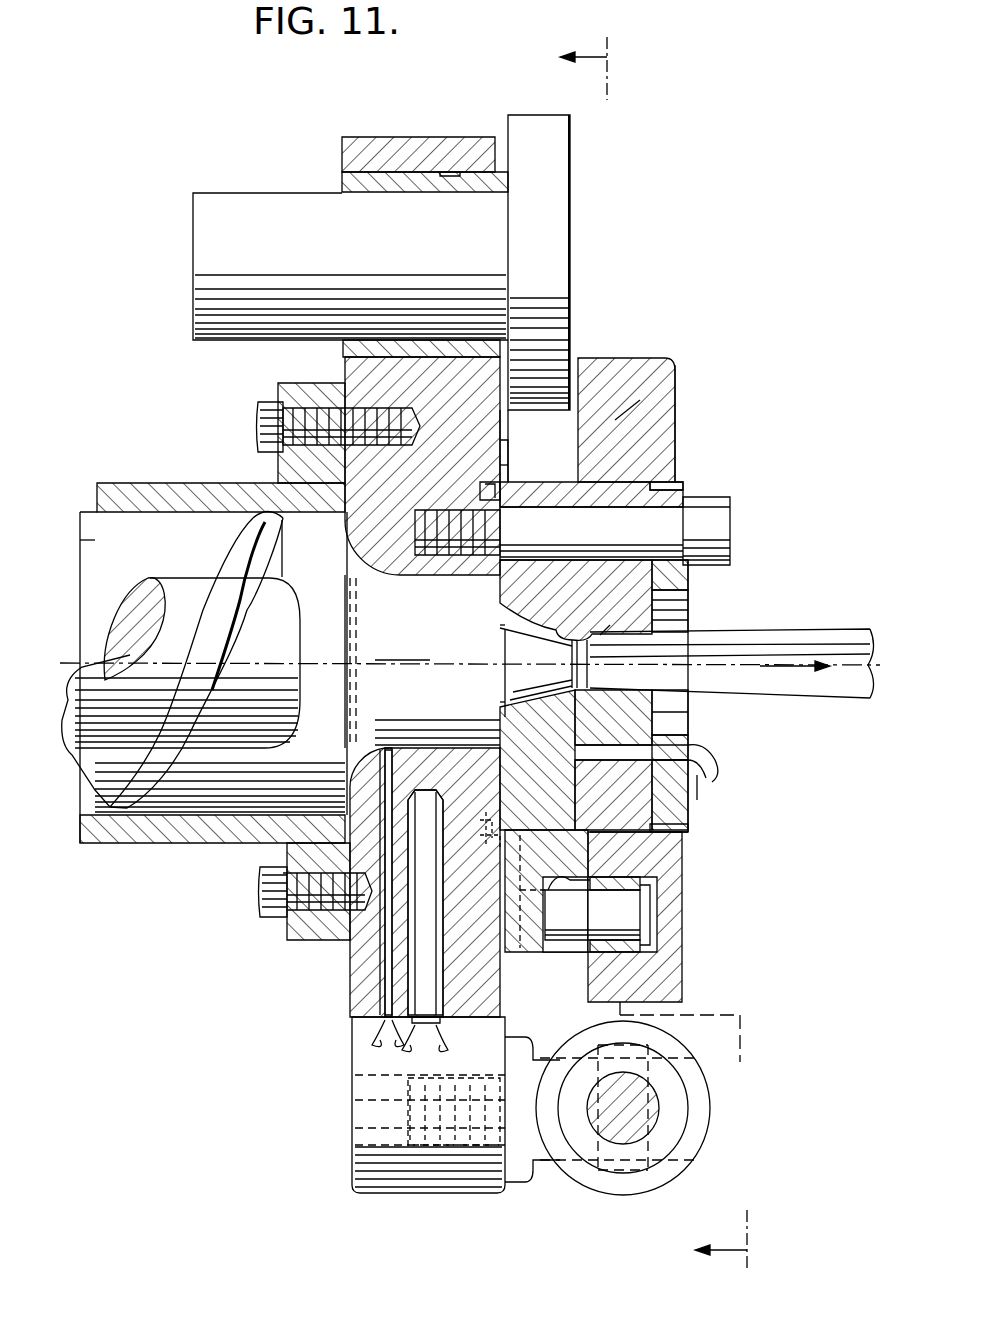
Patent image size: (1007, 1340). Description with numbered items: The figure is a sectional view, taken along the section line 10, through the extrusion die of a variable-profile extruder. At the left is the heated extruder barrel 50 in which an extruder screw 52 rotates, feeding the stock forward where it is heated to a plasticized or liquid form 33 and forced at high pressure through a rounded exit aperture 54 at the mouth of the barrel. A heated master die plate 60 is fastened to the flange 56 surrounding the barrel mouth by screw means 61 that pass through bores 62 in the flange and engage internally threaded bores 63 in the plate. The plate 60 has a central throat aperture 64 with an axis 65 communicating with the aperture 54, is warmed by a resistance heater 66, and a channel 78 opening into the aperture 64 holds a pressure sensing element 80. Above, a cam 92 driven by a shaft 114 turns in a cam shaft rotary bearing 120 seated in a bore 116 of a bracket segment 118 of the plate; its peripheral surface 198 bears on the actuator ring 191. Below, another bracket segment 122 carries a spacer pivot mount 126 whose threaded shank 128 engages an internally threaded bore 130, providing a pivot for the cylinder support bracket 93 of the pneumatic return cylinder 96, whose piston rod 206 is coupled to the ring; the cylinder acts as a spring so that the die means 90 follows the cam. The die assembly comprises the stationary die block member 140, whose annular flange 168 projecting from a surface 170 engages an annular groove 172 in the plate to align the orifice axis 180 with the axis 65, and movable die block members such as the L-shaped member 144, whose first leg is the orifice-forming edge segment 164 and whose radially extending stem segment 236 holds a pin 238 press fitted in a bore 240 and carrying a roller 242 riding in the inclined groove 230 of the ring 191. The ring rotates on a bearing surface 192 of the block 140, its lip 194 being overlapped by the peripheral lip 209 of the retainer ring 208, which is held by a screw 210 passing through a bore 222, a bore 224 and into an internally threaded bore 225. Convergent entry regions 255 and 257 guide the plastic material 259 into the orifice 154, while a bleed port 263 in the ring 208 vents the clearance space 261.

The section line 10 is at (636, 652).
The plasticized or liquid form 33 is at (80, 540).
The heated extruder barrel 50 is at (150, 490).
The extruder screw 52 is at (82, 666).
The exit port or aperture 54 is at (345, 578).
The flange 56 is at (290, 943).
The master die plate 60 is at (345, 532).
The screw means 61 is at (258, 428).
The bores 62 is at (300, 405).
The internally threaded bores 63 is at (376, 408).
The throat aperture 64 is at (425, 615).
The axis 65 is at (408, 660).
The resistance heater 66 is at (444, 932).
The channel 78 is at (393, 772).
The pressure sensing element 80 is at (385, 845).
The die means 90 is at (690, 380).
The cam 92 is at (572, 158).
The cylinder support bracket 93 is at (650, 1060).
The pneumatic return cylinder 96 is at (710, 1110).
The shaft 114 is at (225, 200).
The bore 116 is at (448, 165).
The bracket segment 118 is at (405, 145).
The cam shaft rotary bearing 120 is at (342, 182).
The bracket segment 122 is at (428, 1195).
The spacer pivot mount 126 is at (530, 1040).
The threaded shank 128 is at (408, 1108).
The internally threaded bore 130 is at (395, 1140).
The stationary die block member 140 is at (530, 492).
The movable die block member 144 is at (690, 718).
The orifice 154 is at (606, 645).
The edge segment 164 is at (590, 730).
The annular flange 168 is at (512, 440).
The surface 170 is at (480, 490).
The annular groove 172 is at (482, 484).
The axis 180 is at (560, 655).
The actuator ring 191 is at (640, 348).
The bearing surface 192 is at (622, 482).
The lip 194 is at (683, 475).
The peripheral surface 198 is at (572, 192).
The piston rod 206 is at (655, 1125).
The retainer ring 208 is at (690, 582).
The peripheral lip 209 is at (690, 478).
The screw 210 is at (732, 522).
The bore 222 is at (690, 500).
The bore 224 is at (591, 495).
The internally threaded bore 225 is at (415, 528).
The groove 230 is at (660, 945).
The stem segment 236 is at (548, 782).
The pin 238 is at (645, 900).
The bore 240 is at (528, 900).
The roller or bearing sleeve 242 is at (612, 877).
The convergent entry region 255 is at (500, 628).
The convergent entry region 257 is at (500, 704).
The plastic material 259 is at (575, 632).
The clearance space 261 is at (590, 728).
The bleed port 263 is at (697, 790).